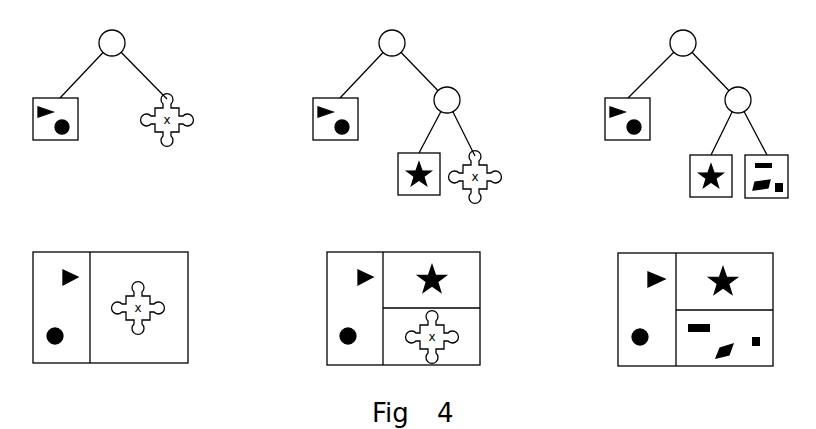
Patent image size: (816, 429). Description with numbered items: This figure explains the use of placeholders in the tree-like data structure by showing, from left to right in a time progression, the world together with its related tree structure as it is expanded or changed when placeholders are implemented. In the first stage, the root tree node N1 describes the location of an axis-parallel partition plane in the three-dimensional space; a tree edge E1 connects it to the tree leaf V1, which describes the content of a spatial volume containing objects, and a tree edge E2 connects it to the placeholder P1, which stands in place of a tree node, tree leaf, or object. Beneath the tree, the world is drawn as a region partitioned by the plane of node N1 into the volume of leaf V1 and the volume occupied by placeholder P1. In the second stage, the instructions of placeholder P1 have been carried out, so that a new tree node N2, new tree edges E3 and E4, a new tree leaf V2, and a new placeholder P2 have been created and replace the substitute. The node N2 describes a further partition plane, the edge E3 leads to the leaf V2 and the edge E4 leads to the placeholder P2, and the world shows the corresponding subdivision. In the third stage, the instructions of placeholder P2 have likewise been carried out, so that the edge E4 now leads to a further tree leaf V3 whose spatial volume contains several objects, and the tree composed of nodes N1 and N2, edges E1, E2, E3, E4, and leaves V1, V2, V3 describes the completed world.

The tree node N1 is at (397, 43).
The tree node N2 is at (592, 100).
The tree edge E1 is at (371, 70).
The tree edge E2 is at (425, 71).
The tree edge E3 is at (572, 127).
The tree edge E4 is at (615, 128).
The tree leaf V1 is at (341, 131).
The tree leaf V2 is at (565, 188).
The tree leaf V3 is at (766, 189).
The placeholder P1 is at (167, 129).
The placeholder P2 is at (475, 186).